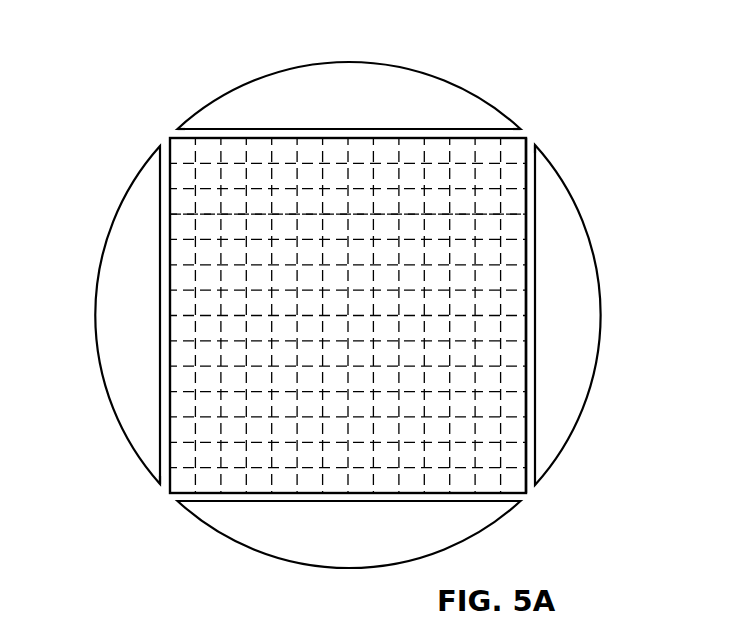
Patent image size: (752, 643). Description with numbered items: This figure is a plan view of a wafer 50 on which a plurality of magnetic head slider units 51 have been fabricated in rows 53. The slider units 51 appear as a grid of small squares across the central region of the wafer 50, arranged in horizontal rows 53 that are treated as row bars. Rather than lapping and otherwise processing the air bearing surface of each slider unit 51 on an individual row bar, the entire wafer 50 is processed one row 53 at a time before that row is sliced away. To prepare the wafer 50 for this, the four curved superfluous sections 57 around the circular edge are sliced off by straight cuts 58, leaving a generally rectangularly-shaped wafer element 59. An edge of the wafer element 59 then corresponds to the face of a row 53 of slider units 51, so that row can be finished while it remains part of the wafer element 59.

The wafer 50 is at (349, 319).
The slider units 51 is at (235, 150).
The rows 53 is at (518, 200).
The superfluous sections 57 is at (437, 87).
The cuts 58 is at (509, 125).
The wafer element 59 is at (527, 333).